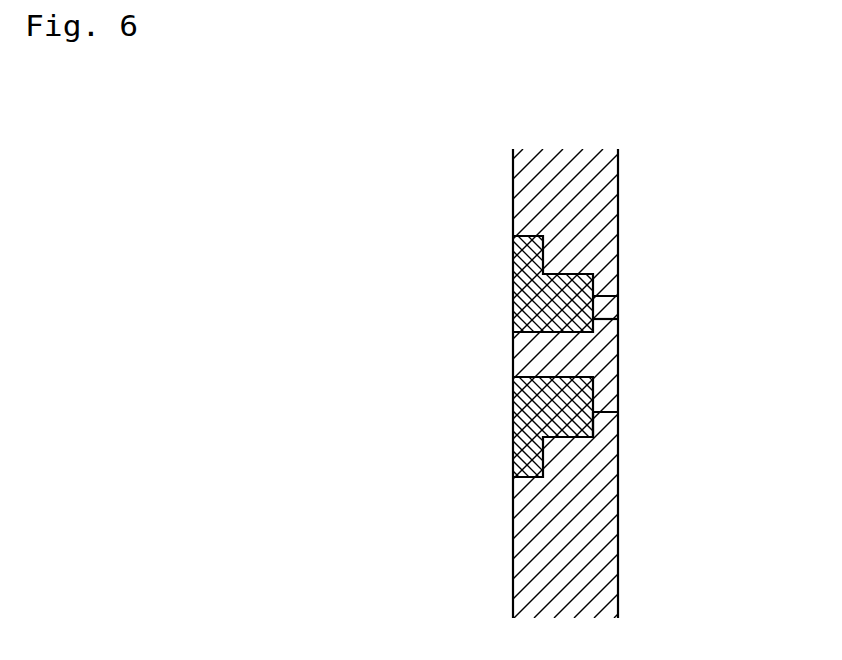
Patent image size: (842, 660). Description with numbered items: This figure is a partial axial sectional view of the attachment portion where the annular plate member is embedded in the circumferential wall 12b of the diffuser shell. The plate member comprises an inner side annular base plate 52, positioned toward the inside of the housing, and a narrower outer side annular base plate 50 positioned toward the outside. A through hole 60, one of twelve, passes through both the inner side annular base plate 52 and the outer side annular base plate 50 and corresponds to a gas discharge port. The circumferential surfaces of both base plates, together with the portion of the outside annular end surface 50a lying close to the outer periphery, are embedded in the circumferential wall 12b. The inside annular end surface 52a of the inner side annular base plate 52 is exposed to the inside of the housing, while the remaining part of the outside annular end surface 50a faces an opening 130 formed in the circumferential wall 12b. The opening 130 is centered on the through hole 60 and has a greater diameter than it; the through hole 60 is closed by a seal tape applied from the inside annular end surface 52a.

The circumferential wall 12b is at (602, 198).
The inside annular end surface 52a is at (513, 278).
The inner side annular base plate 52 is at (528, 457).
The through hole 60 is at (528, 355).
The opening 130 is at (607, 373).
The outside annular end surface 50a is at (603, 319).
The outer side annular base plate 50 is at (567, 420).